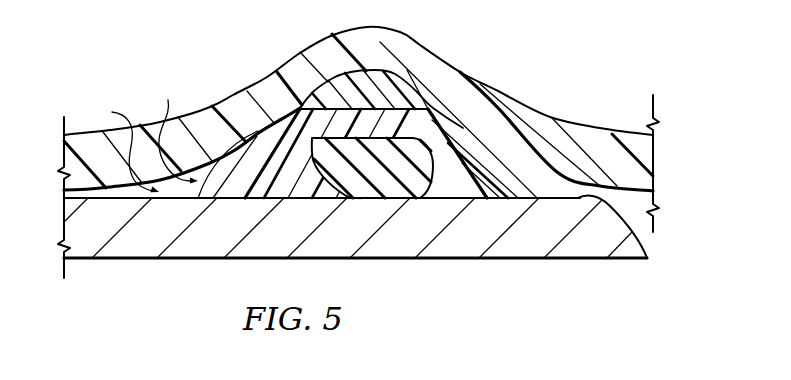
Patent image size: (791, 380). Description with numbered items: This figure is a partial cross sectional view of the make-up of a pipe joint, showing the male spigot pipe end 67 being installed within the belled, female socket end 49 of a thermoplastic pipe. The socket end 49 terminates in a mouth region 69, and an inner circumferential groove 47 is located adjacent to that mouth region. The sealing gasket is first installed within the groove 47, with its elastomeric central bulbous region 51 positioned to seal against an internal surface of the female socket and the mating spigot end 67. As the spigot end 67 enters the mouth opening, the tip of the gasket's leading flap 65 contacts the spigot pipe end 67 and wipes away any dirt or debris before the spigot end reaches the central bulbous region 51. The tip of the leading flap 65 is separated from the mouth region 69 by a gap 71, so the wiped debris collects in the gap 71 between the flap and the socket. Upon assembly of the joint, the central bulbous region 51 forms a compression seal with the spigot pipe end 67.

The groove 47 is at (505, 100).
The socket end 49 is at (230, 95).
The central bulbous region 51 is at (366, 178).
The outer edge of the leading flap 65 is at (222, 200).
The spigot pipe end 67 is at (602, 206).
The mouth region 69 is at (123, 146).
The gap 71 is at (176, 131).